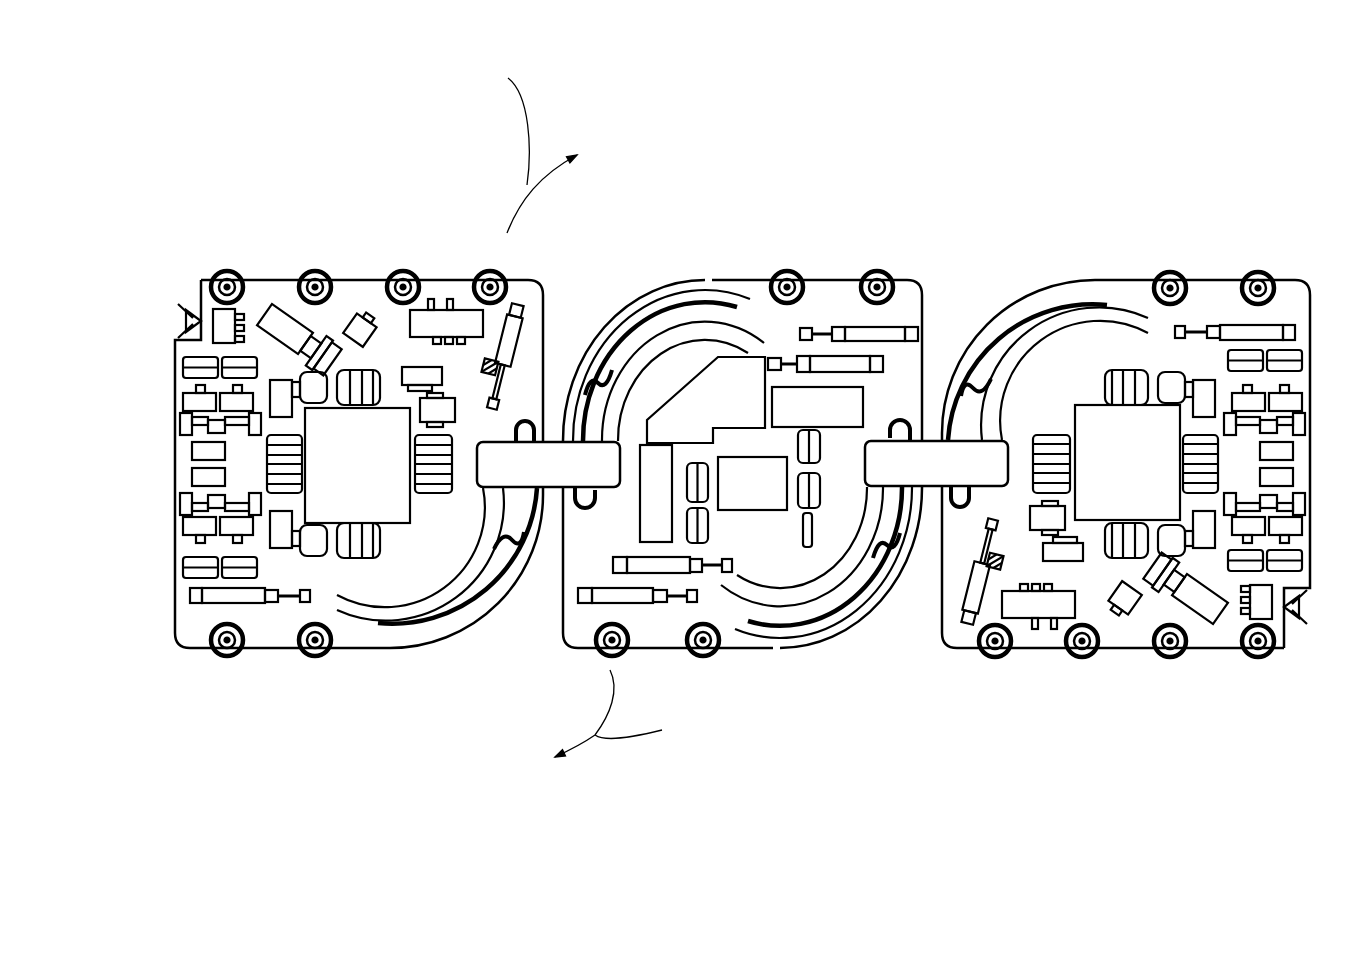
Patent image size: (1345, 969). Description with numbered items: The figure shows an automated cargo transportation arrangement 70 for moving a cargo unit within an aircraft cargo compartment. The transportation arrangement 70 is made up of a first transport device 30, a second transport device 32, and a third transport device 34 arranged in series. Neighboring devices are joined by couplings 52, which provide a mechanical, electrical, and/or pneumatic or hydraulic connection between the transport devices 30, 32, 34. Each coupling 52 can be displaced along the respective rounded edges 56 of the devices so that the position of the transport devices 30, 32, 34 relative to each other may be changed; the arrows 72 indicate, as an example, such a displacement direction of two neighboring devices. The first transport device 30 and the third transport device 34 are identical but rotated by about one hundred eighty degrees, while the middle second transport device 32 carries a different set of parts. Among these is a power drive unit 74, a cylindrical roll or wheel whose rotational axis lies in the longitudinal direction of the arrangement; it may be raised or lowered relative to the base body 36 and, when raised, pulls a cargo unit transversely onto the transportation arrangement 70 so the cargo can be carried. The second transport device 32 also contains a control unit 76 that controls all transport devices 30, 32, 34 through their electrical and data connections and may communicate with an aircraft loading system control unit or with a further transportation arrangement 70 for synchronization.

The automated cargo transportation arrangement 70 is at (238, 137).
The arrows 72 is at (583, 406).
The first transport device 30 is at (408, 227).
The second transport device 32 is at (748, 384).
The third transport device 34 is at (1187, 225).
The base body 36 is at (267, 288).
The coupling 52 is at (558, 470).
The rounded edge 56 is at (443, 633).
The power drive unit 74 is at (747, 467).
The control unit 76 is at (695, 398).